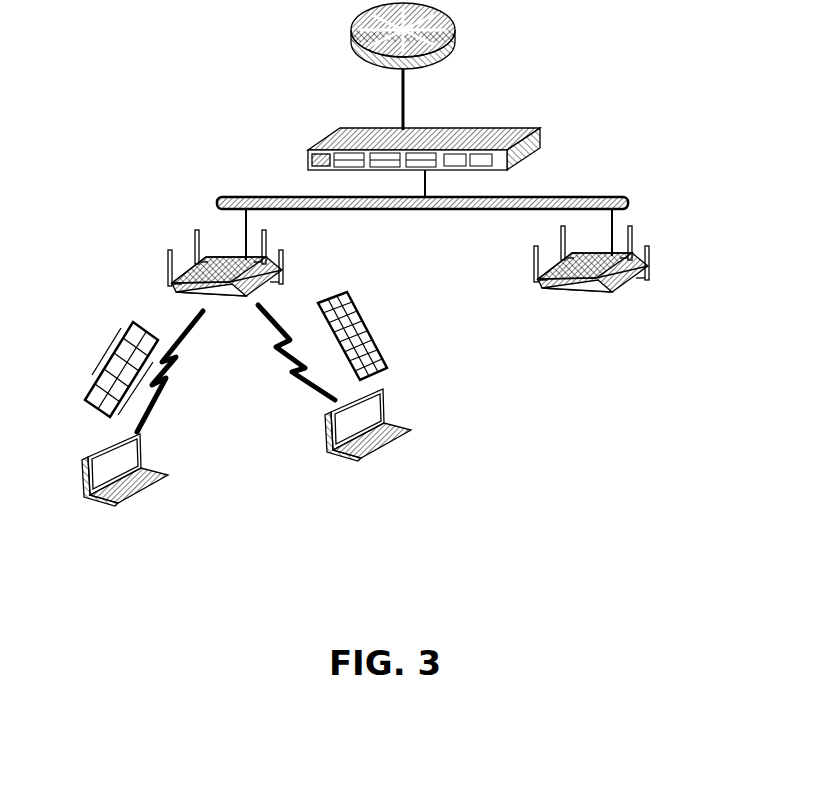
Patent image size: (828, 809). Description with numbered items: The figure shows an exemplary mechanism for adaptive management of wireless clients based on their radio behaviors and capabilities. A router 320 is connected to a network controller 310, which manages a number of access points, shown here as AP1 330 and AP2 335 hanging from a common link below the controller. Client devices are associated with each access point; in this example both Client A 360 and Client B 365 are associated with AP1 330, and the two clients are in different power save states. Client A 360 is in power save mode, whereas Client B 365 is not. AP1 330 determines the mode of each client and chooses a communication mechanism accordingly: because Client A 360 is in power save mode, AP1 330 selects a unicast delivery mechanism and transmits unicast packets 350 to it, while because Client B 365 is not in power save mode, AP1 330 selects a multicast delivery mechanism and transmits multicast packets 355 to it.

The network controller 310 is at (236, 169).
The router 320 is at (286, 62).
The AP1 330 is at (132, 247).
The AP2 335 is at (602, 344).
The unicast packets 350 is at (62, 366).
The multicast packets 355 is at (407, 372).
The Client A 360 is at (198, 525).
The Client B 365 is at (409, 501).